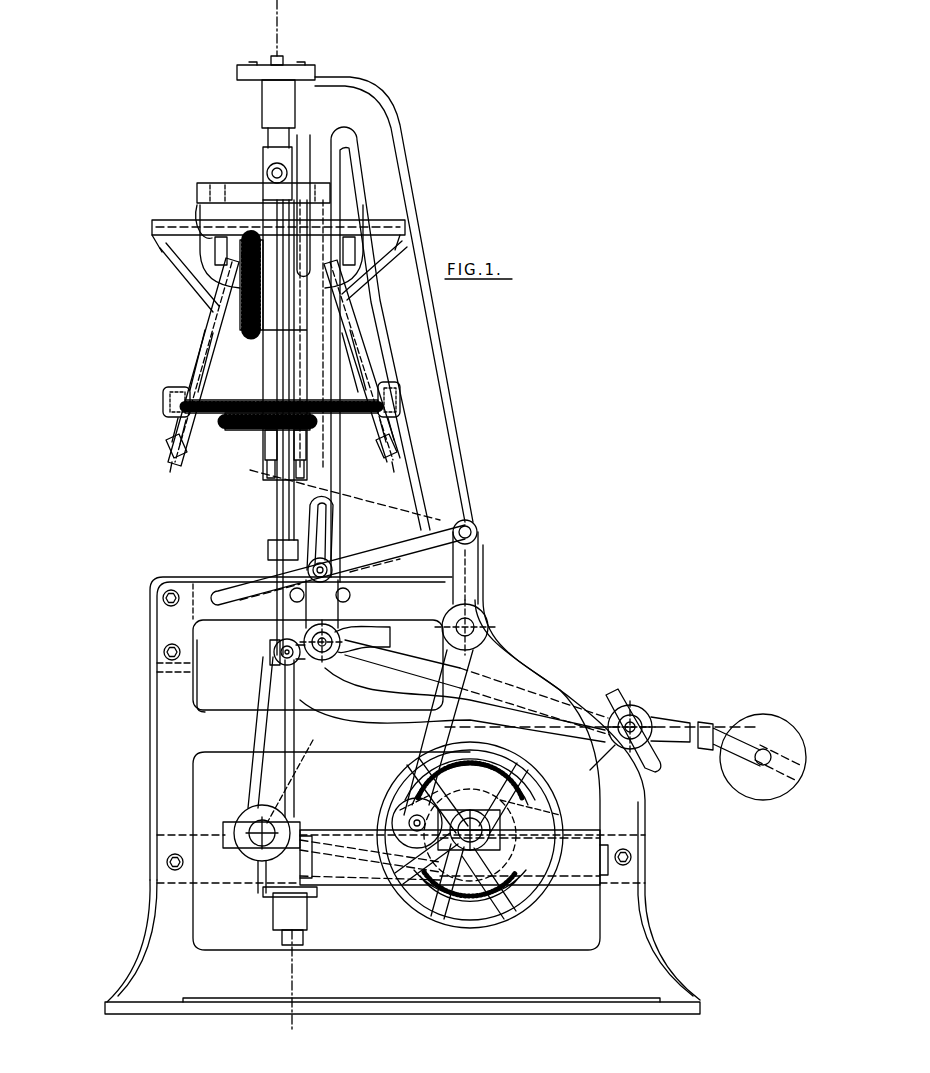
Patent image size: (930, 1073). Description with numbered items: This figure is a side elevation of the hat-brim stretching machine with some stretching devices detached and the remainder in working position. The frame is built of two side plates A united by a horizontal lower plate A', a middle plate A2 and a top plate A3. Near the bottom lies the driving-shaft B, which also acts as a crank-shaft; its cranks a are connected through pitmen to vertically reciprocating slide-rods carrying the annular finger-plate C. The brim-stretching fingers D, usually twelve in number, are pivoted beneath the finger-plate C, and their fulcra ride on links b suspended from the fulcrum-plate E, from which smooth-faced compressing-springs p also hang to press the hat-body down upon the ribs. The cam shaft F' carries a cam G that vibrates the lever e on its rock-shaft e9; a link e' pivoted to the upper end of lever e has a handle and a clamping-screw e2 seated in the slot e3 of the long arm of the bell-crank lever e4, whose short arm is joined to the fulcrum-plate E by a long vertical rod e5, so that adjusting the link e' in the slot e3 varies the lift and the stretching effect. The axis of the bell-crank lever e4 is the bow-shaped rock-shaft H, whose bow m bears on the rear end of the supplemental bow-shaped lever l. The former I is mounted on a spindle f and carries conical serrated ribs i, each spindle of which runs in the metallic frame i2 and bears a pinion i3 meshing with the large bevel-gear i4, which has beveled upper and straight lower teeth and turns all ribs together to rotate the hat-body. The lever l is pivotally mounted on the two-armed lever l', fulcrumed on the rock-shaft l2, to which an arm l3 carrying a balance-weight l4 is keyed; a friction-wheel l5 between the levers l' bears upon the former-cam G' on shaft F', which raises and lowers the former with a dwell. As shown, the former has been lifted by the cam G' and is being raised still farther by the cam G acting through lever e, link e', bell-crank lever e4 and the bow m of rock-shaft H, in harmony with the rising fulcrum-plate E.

The side plates A is at (402, 515).
The top plate A3 is at (283, 58).
The horizontal lower plate A' is at (454, 857).
The middle plate A2 is at (272, 643).
The slot e3 is at (268, 163).
The fulcrum-plate E is at (263, 185).
The compressing-springs p is at (197, 205).
The annular finger-plate C is at (196, 210).
The links b is at (285, 249).
The brim-stretching fingers D is at (283, 276).
The ribs i is at (352, 310).
The former I is at (249, 285).
The metallic frame i2 is at (281, 361).
The pinion i3 is at (188, 390).
The bevel-gear i4 is at (213, 418).
The spindle f is at (270, 427).
The long vertical rod e5 is at (282, 521).
The link e' is at (332, 566).
The clamping-screw e2 is at (329, 568).
The bell-crank lever e4 is at (320, 604).
The bow-shaped rock-shaft H is at (327, 647).
The bow m is at (362, 639).
The supplemental bow-shaped lever l is at (477, 683).
The two-armed lever l' is at (452, 705).
The cranks a is at (290, 760).
The driving-shaft B is at (290, 826).
The lever e is at (435, 684).
The rock-shaft e9 is at (475, 622).
The friction-wheel l5 is at (602, 718).
The rock-shaft l2 is at (636, 712).
The arm l3 is at (705, 735).
The balance-weight l4 is at (770, 752).
The cam G is at (470, 835).
The former-cam G' is at (463, 811).
The cam shaft F' is at (480, 815).